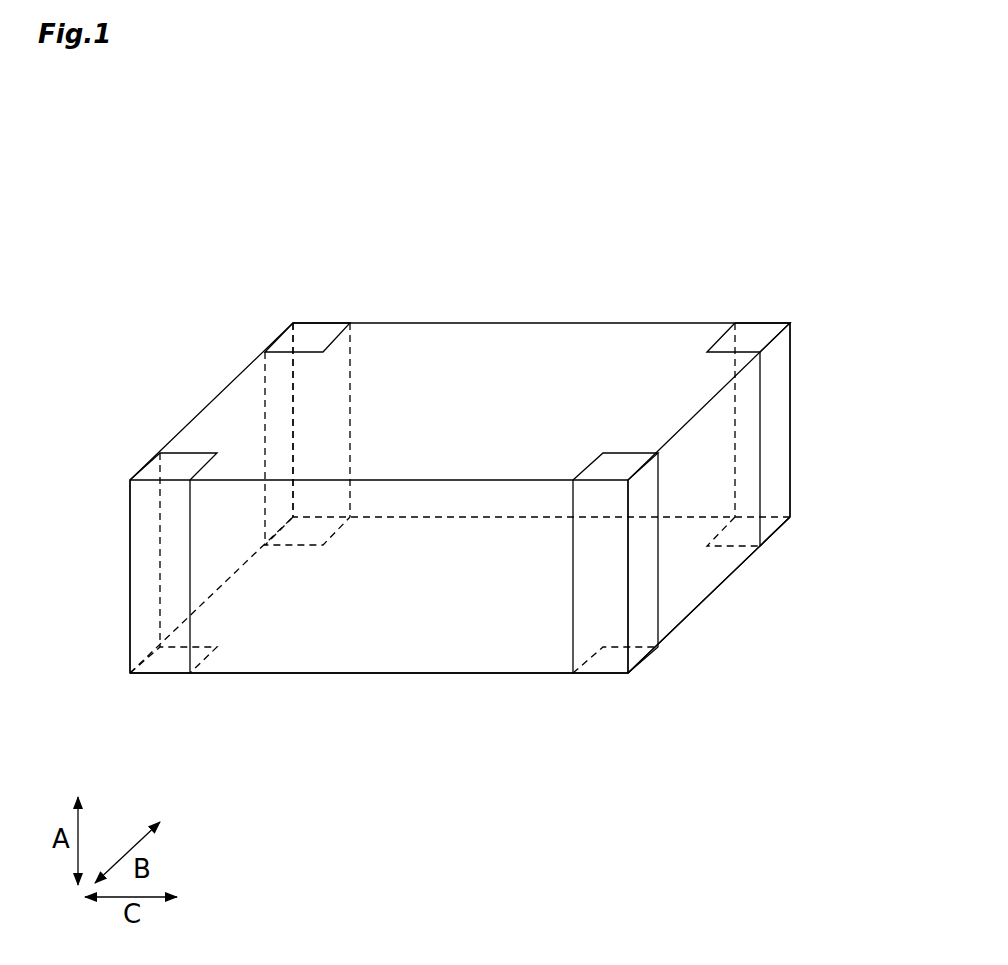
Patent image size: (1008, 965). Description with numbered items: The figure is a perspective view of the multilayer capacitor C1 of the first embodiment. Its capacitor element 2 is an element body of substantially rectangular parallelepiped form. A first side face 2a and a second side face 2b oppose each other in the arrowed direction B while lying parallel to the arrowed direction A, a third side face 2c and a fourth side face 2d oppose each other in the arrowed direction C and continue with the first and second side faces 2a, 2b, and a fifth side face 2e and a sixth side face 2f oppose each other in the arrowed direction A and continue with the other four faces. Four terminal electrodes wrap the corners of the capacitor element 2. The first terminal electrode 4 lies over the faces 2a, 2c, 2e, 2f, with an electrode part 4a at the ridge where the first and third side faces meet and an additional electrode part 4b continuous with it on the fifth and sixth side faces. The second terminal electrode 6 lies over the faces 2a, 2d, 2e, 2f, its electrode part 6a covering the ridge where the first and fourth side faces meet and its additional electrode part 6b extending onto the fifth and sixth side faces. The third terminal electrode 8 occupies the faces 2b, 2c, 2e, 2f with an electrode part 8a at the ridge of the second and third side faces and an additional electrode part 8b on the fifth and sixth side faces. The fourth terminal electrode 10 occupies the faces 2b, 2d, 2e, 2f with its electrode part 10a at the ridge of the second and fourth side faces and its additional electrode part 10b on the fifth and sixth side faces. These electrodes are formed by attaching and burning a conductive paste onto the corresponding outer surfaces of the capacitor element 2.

The multilayer capacitor C1 is at (667, 225).
The capacitor element 2 is at (433, 348).
The first side face 2a is at (452, 635).
The second side face 2b is at (528, 367).
The third side face 2c is at (212, 442).
The fourth side face 2d is at (702, 562).
The fifth side face 2e is at (227, 417).
The sixth side face 2f is at (375, 642).
The first terminal electrode 4 is at (152, 595).
The electrode part 4a is at (153, 608).
The additional electrode part 4b is at (172, 467).
The second terminal electrode 6 is at (647, 561).
The electrode part 6a is at (603, 622).
The additional electrode part 6b is at (618, 465).
The third terminal electrode 8 is at (337, 433).
The electrode part 8a is at (337, 407).
The additional electrode part 8b is at (316, 330).
The fourth terminal electrode 10 is at (806, 446).
The electrode part 10a is at (782, 403).
The additional electrode part 10b is at (793, 302).